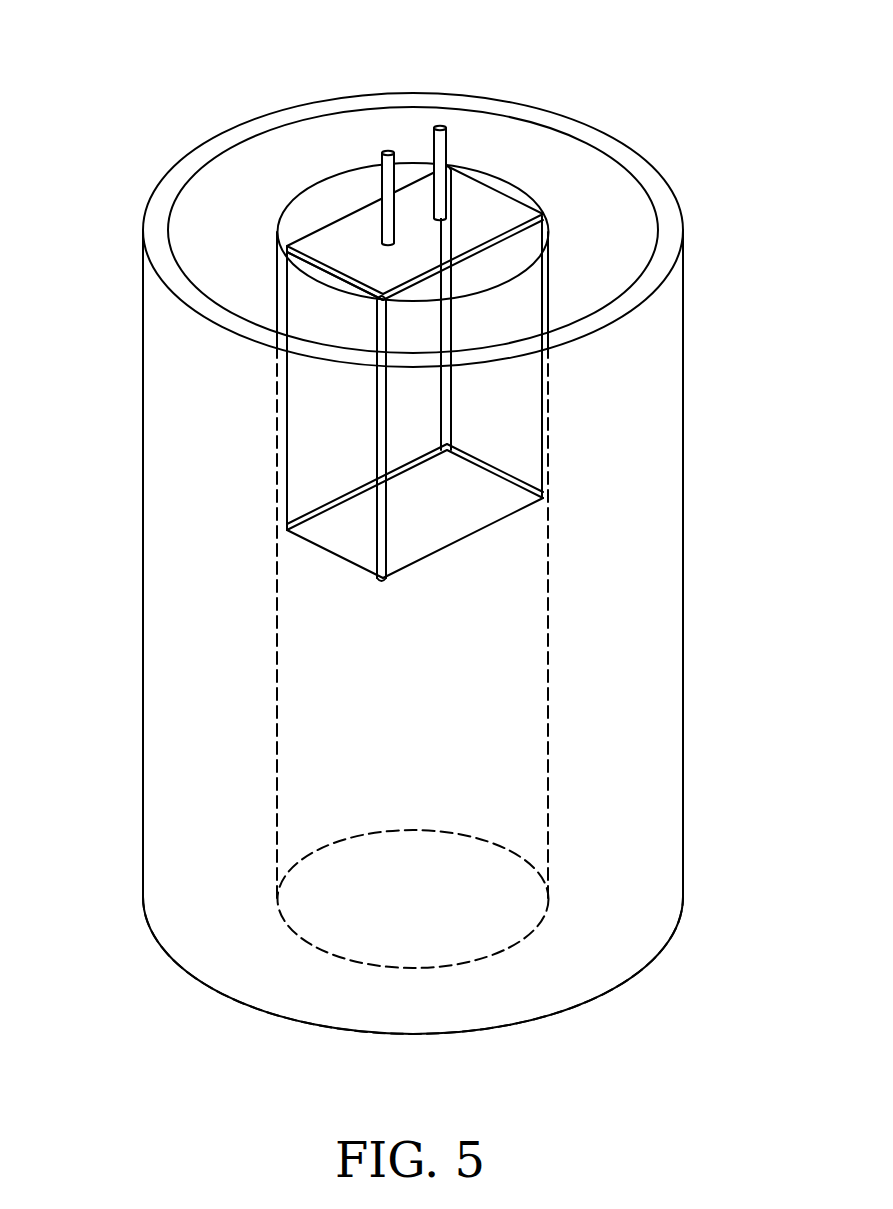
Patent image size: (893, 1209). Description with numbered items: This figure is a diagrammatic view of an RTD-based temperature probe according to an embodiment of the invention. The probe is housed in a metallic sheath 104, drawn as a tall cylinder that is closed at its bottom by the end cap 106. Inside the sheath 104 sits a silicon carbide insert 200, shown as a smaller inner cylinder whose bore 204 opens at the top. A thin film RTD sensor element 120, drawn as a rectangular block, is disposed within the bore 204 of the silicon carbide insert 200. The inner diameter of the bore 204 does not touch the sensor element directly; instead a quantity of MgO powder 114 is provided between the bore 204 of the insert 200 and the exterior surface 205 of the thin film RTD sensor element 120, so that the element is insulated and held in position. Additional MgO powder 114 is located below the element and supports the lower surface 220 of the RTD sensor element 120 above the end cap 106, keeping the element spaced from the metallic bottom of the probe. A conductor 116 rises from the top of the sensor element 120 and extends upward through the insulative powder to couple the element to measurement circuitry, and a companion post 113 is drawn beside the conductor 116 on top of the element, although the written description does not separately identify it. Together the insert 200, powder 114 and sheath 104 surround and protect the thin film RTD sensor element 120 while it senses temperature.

The metallic sheath 104 is at (685, 312).
The end cap 106 is at (443, 1038).
The first pin 113 is at (378, 183).
The MgO powder 114 is at (300, 225).
The conductor 116 is at (448, 146).
The thin film RTD sensor element 120 is at (482, 207).
The silicon carbide insert 200 is at (535, 342).
The bore 204 is at (340, 195).
The exterior surface 205 is at (325, 278).
The lower surface 220 is at (418, 565).